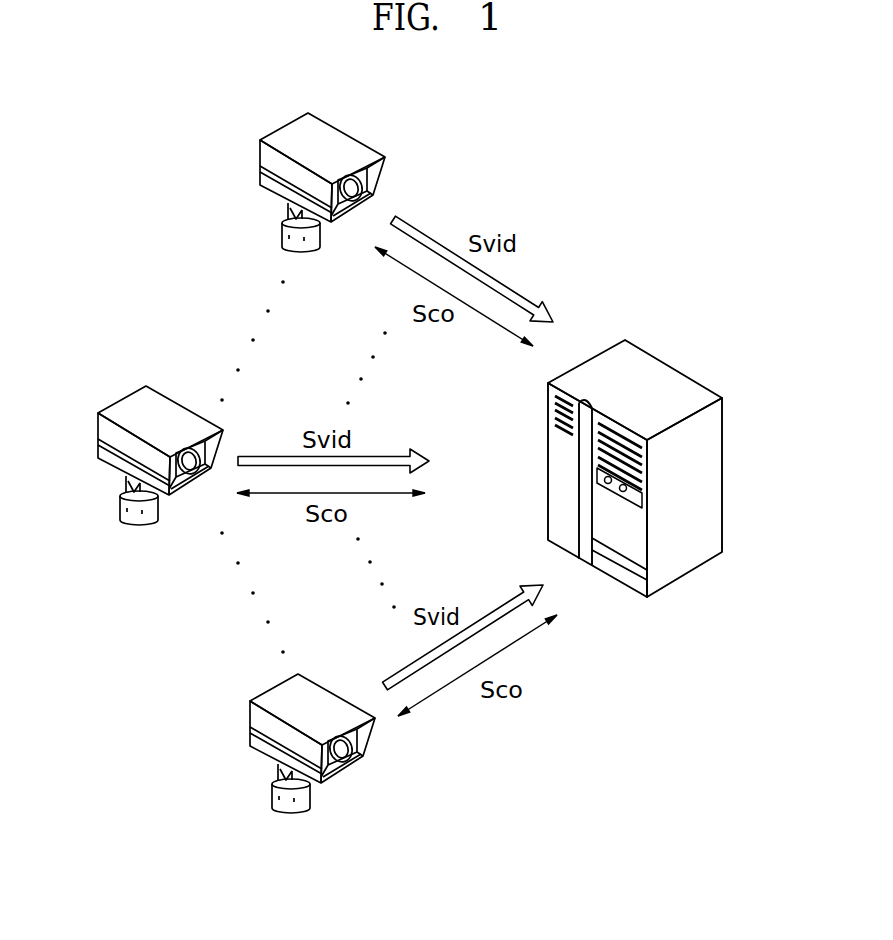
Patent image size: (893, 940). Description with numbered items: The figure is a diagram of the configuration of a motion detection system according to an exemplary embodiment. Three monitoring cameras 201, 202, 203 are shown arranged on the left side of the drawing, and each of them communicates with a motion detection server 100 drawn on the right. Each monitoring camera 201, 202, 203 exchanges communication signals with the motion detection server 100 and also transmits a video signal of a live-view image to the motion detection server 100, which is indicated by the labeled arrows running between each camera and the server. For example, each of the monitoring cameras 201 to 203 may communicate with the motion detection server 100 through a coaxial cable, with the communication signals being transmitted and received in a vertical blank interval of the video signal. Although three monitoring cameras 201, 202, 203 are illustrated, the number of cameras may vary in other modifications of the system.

The motion detection server 100 is at (673, 367).
The monitoring camera 201 is at (285, 130).
The monitoring camera 202 is at (123, 402).
The monitoring camera 203 is at (275, 688).